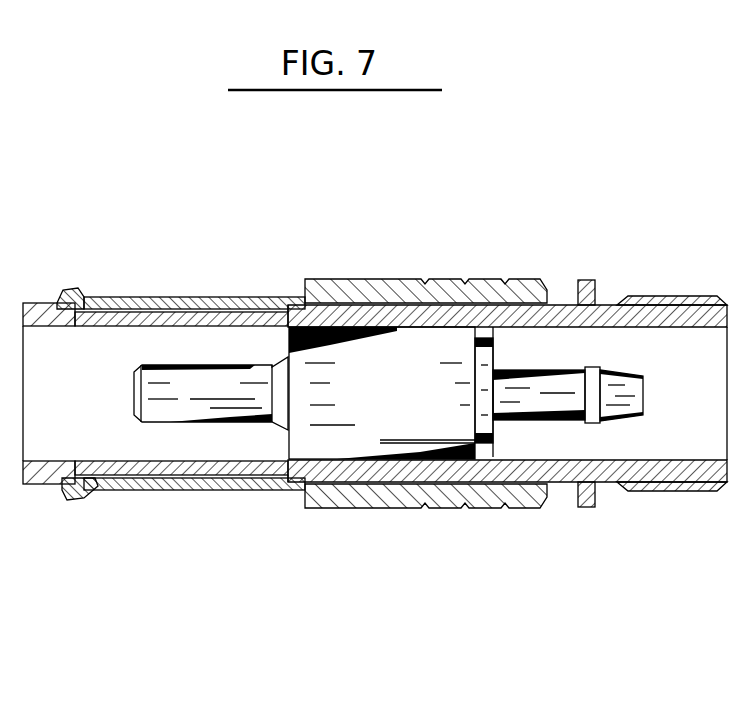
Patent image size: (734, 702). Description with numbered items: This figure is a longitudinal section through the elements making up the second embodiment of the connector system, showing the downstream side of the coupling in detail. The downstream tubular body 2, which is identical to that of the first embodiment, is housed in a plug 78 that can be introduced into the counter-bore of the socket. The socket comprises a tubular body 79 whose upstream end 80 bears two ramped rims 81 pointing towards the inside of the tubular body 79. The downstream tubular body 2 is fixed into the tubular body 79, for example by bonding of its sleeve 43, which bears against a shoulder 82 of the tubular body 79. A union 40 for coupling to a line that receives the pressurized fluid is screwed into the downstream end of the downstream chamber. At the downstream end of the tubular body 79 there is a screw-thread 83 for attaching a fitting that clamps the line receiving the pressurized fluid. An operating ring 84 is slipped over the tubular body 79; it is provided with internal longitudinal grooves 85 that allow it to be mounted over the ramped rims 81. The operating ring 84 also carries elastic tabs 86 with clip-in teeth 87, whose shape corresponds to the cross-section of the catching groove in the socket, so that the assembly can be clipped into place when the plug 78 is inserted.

The downstream tubular body 2 is at (283, 445).
The union 40 is at (623, 422).
The sleeve 43 is at (448, 427).
The plug 78 is at (508, 268).
The tubular body 79 is at (623, 302).
The upstream end 80 is at (29, 303).
The ramped rims 81 is at (80, 477).
The shoulder 82 is at (497, 456).
The screw-thread 83 is at (673, 293).
The operating ring 84 is at (412, 268).
The internal longitudinal grooves 85 is at (548, 307).
The elastic tabs 86 is at (145, 297).
The clip-in teeth 87 is at (67, 499).